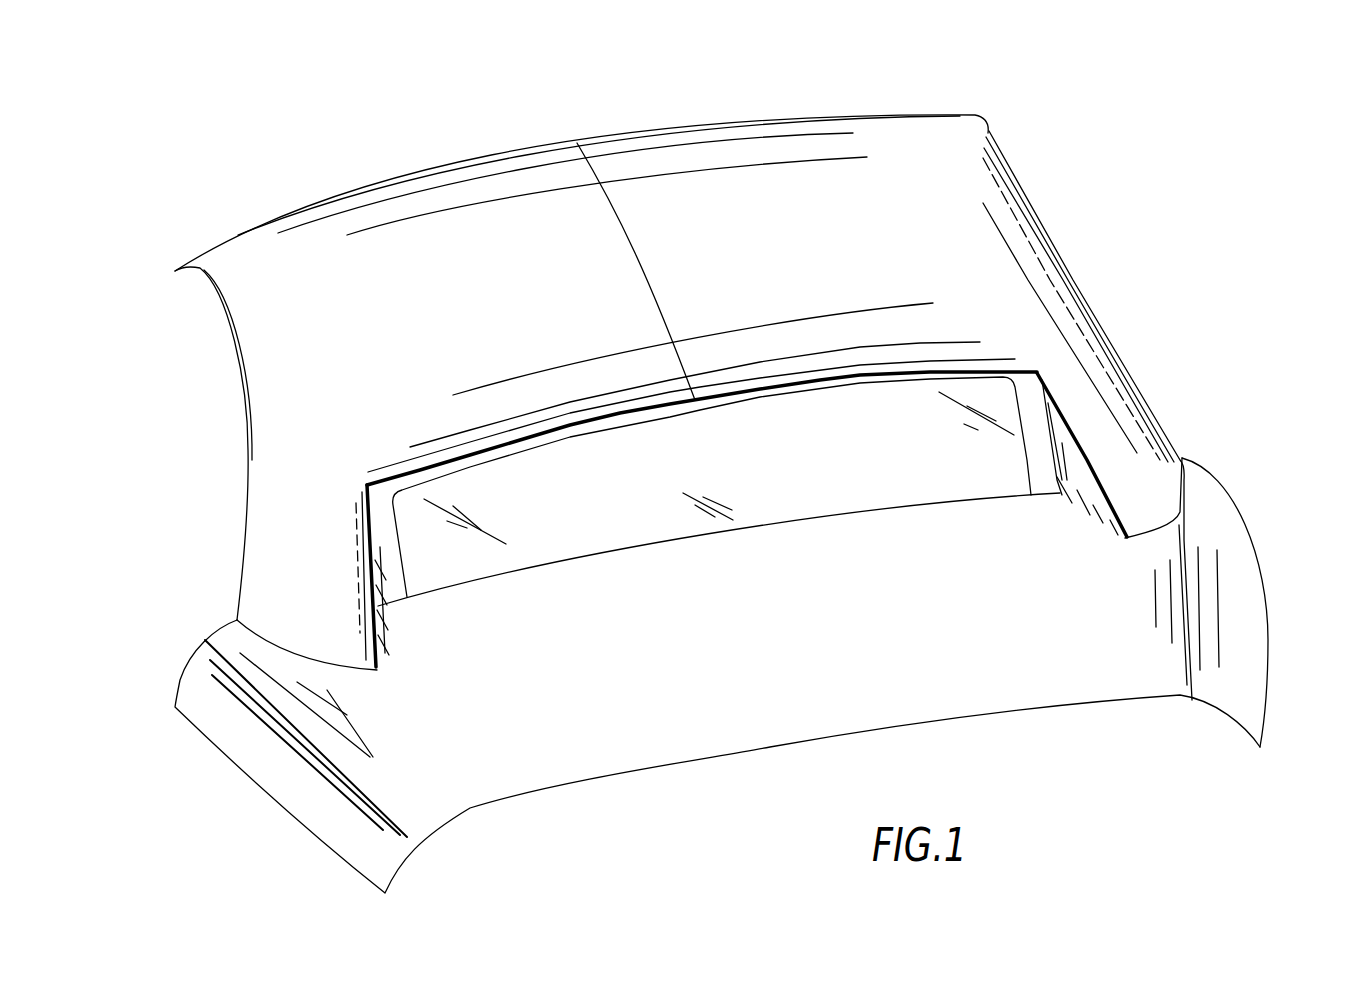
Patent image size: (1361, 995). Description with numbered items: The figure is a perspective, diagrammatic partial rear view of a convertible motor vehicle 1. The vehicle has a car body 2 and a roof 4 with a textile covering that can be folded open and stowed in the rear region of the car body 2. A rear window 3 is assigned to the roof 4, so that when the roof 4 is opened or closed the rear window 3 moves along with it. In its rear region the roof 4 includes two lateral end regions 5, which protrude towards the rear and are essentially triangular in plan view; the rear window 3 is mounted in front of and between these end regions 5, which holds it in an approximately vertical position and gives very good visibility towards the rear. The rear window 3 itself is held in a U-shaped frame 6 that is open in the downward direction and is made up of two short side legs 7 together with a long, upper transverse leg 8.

The motor vehicle 1 is at (700, 114).
The car body 2 is at (157, 515).
The rear window 3 is at (741, 483).
The roof 4 is at (357, 252).
The lateral end regions 5 is at (313, 584).
The U-shaped frame 6 is at (1047, 468).
The side legs 7 is at (388, 543).
The upper transverse leg 8 is at (973, 377).